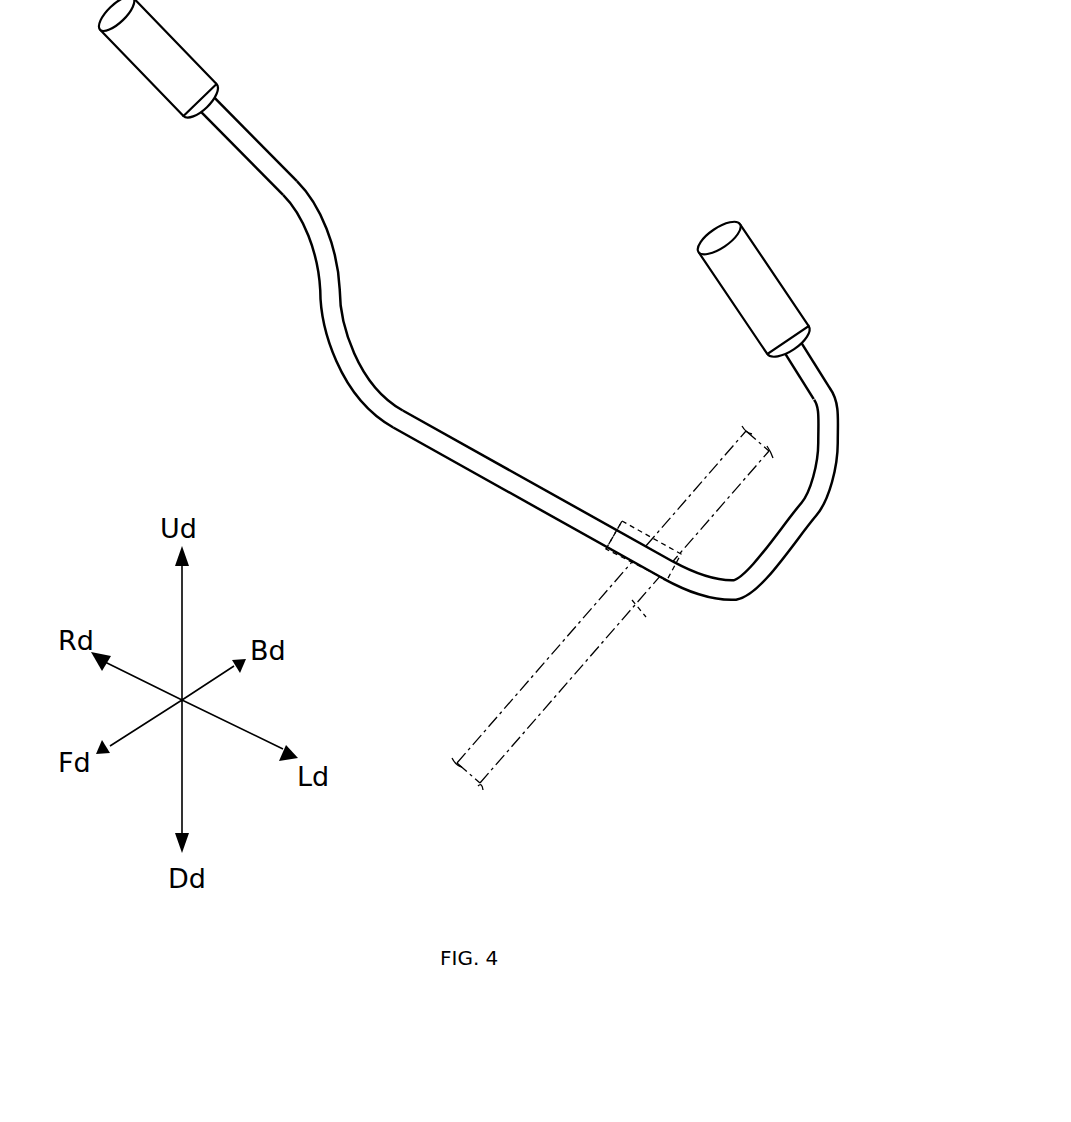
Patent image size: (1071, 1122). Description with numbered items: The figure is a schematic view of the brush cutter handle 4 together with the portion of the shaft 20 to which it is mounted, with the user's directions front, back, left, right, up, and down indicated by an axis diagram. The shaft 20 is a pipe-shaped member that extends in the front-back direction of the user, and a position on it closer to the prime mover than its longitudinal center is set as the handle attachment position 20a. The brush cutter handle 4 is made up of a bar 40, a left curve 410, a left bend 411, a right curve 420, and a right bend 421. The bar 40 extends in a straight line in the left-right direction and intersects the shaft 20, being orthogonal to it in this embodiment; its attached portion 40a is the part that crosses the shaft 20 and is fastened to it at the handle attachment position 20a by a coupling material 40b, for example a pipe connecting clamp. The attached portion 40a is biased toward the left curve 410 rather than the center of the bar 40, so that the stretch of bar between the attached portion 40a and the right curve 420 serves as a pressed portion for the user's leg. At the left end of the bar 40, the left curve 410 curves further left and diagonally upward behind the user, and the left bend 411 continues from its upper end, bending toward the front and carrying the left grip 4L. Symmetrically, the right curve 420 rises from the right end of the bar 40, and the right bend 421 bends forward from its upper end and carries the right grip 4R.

The brush cutter handle 4 is at (492, 313).
The right grip 4R is at (158, 70).
The left grip 4L is at (757, 280).
The bar 40 is at (490, 468).
The attached portion 40a is at (635, 550).
The coupling material 40b is at (607, 567).
The left curve 410 is at (788, 557).
The left bend 411 is at (810, 370).
The right curve 420 is at (335, 310).
The right bend 421 is at (253, 148).
The shaft 20 is at (553, 683).
The handle attachment position 20a is at (632, 600).